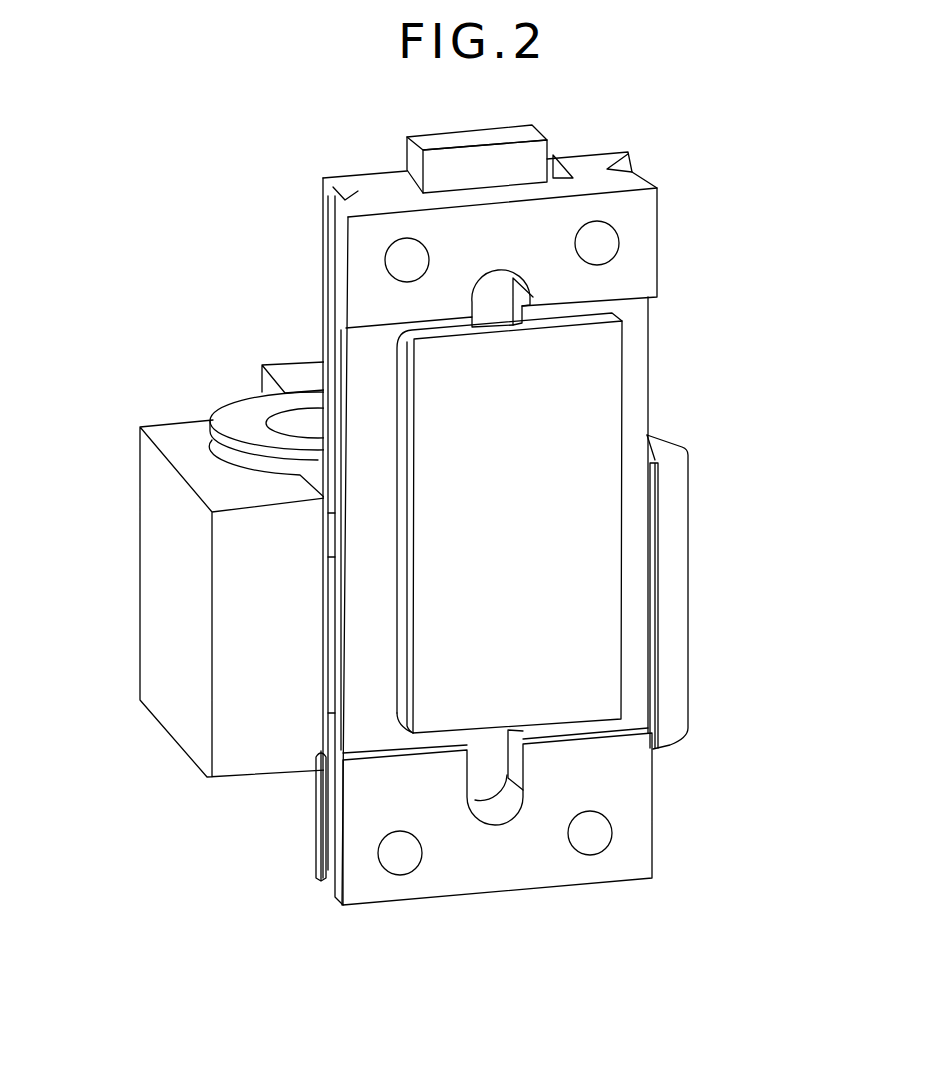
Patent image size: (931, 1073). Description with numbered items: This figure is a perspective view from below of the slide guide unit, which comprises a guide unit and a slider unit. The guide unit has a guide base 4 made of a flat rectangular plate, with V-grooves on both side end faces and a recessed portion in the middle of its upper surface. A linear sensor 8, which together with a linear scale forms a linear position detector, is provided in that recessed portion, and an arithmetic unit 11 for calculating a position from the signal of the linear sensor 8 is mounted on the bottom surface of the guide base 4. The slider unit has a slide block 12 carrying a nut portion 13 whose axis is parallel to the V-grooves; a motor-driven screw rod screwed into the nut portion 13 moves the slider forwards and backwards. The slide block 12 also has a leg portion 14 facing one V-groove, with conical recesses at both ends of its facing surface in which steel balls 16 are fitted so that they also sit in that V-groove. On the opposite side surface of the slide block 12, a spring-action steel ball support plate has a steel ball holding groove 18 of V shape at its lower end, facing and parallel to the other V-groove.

The guide base 4 is at (662, 240).
The linear sensor 8 is at (547, 143).
The arithmetic unit 11 is at (622, 393).
The slide block 12 is at (290, 360).
The nut portion 13 is at (237, 397).
The leg portion 14 is at (163, 563).
The steel balls 16 is at (317, 798).
The steel ball holding groove 18 is at (690, 533).